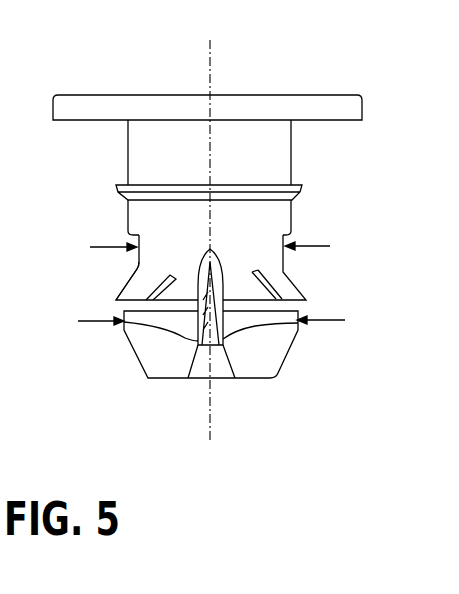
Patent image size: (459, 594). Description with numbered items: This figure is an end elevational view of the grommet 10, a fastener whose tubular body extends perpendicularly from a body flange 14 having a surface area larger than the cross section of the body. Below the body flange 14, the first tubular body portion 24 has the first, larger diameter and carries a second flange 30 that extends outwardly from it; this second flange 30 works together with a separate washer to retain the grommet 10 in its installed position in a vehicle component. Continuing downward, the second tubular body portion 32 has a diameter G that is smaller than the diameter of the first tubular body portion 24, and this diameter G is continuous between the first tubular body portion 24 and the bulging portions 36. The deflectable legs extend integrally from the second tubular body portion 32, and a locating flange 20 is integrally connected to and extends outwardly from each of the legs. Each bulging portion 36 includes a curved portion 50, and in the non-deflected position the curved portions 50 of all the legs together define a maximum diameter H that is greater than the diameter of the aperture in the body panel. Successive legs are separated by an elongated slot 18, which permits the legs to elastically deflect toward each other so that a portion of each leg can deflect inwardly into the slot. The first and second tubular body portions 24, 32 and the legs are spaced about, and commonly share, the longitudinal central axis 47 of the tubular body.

The grommet 10 is at (370, 63).
The body flange 14 is at (308, 108).
The elongated slot 18 is at (222, 374).
The locating flange 20 is at (288, 292).
The first tubular body portion 24 is at (282, 147).
The second flange 30 is at (300, 191).
The second tubular body portion 32 is at (136, 262).
The bulging portion 36 is at (270, 345).
The longitudinal central axis 47 is at (208, 75).
The curved portion 50 is at (137, 322).
The diameter of second tubular body portion G is at (199, 250).
The maximum diameter of curved portions H is at (201, 323).